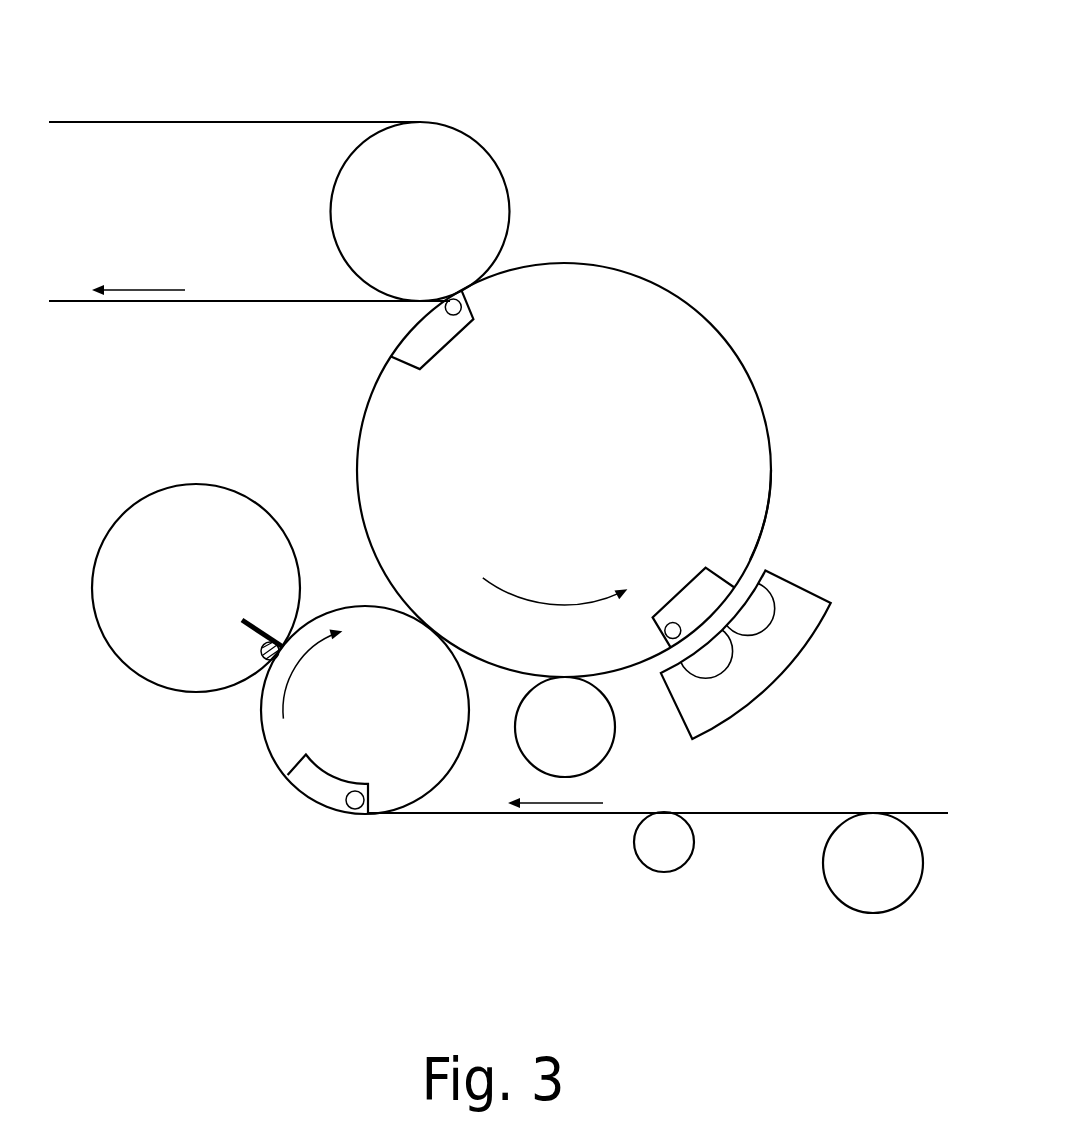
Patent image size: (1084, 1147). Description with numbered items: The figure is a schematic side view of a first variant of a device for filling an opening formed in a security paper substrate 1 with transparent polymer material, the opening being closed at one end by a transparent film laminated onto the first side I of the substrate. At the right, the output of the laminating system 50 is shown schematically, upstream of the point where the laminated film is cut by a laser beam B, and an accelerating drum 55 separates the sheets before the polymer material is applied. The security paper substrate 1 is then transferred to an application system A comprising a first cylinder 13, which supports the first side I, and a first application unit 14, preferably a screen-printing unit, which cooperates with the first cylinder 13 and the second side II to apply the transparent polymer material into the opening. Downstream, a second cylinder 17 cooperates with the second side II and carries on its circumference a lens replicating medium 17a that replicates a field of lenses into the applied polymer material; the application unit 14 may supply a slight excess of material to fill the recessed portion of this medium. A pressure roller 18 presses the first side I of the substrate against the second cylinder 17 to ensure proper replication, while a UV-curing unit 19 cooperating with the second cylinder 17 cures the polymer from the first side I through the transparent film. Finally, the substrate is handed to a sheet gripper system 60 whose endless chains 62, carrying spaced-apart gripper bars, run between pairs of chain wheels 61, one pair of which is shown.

The security paper substrate 1 is at (558, 813).
The first cylinder 13 is at (273, 728).
The first application unit 14 is at (140, 517).
The second cylinder 17 is at (722, 408).
The lens replicating medium 17a is at (772, 475).
The pressure roller 18 is at (590, 755).
The UV-curing unit 19 is at (795, 635).
The output of the laminating system 50 is at (850, 892).
The accelerating drum 55 is at (655, 857).
The sheet gripper system 60 is at (278, 106).
The chain wheels 61 is at (462, 162).
The endless chains 62 is at (218, 301).
The application system A is at (174, 768).
The laser beam B is at (797, 803).
The first side of the security paper substrate I is at (935, 803).
The second side of the security paper substrate II is at (485, 824).